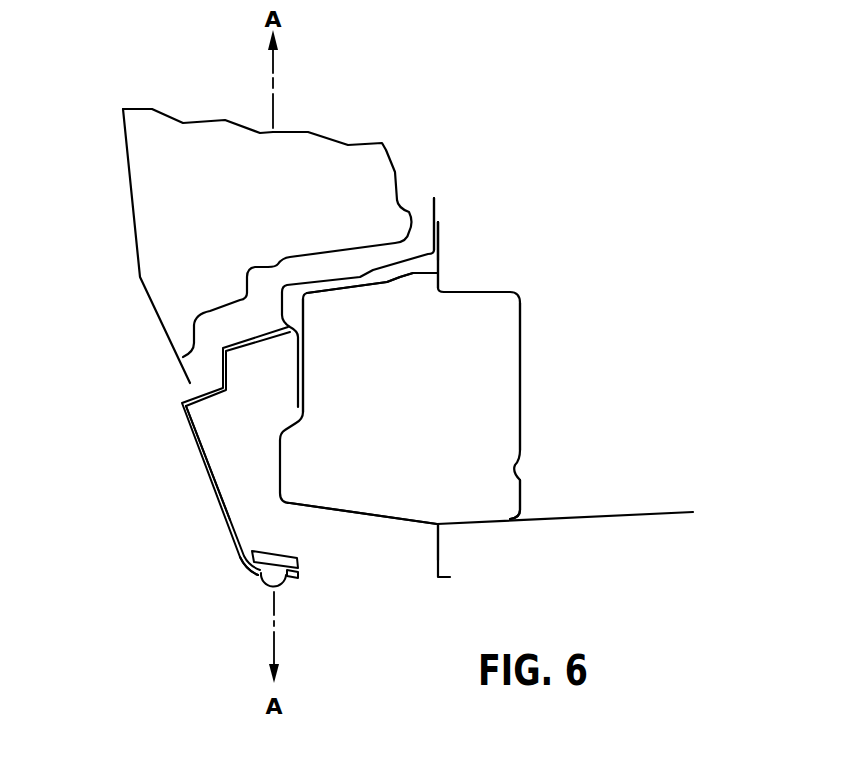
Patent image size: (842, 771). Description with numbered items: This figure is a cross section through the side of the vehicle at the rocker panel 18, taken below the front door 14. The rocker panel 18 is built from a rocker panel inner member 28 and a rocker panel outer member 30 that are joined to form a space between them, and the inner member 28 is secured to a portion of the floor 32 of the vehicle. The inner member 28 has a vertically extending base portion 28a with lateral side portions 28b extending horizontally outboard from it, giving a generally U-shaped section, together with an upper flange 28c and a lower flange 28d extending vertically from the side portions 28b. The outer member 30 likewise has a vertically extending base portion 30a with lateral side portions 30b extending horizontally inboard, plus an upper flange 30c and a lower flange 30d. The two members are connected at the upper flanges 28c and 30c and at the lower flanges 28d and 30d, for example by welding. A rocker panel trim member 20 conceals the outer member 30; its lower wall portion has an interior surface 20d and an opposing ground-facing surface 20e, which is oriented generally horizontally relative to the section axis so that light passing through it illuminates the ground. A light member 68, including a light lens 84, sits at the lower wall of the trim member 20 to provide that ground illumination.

The front door 14 is at (131, 196).
The rocker panel 18 is at (536, 303).
The rocker panel trim member 20 is at (200, 472).
The interior surface 20d is at (240, 547).
The ground-facing surface 20e is at (253, 573).
The rocker panel inner member 28 is at (520, 417).
The base portion 28a is at (520, 357).
The lateral side portions 28b is at (478, 290).
The upper flange 28c is at (438, 243).
The lower flange 28d is at (440, 551).
The rocker panel outer member 30 is at (270, 480).
The base portion 30a is at (303, 388).
The lateral side portions 30b is at (405, 277).
The upper flange 30c is at (434, 200).
The lower flange 30d is at (438, 555).
The floor 32 is at (650, 512).
The light member 68 is at (245, 562).
The light lens 84 is at (263, 583).